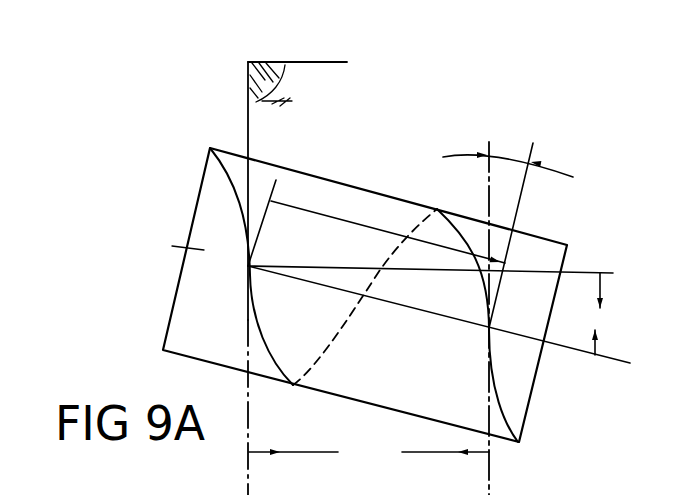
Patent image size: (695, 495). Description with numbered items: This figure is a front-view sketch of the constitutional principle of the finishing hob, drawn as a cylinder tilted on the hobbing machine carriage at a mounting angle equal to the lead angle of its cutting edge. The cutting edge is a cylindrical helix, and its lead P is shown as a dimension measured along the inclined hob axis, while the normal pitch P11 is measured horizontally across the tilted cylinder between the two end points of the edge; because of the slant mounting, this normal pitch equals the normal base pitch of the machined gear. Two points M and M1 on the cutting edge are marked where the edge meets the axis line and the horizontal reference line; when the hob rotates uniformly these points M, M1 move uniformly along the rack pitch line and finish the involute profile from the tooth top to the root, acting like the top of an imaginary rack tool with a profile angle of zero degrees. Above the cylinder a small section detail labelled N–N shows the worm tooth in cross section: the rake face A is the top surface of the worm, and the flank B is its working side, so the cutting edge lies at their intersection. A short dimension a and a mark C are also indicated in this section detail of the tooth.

The section line N- N is at (252, 250).
The rake face A is at (297, 46).
The flank B is at (247, 78).
The distance a is at (247, 97).
The feature C is at (275, 88).
The point M is at (401, 304).
The point M1 is at (489, 248).
The lead of the helix cutting edge P is at (376, 223).
The normal pitch P11 is at (369, 442).